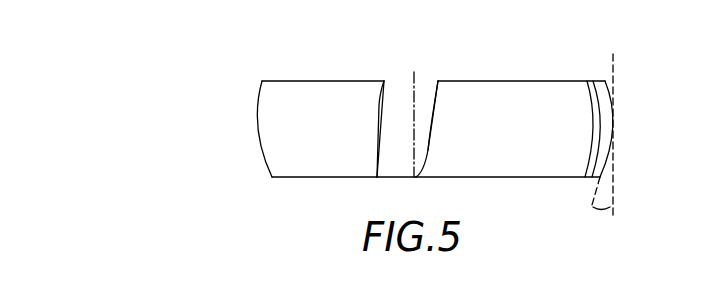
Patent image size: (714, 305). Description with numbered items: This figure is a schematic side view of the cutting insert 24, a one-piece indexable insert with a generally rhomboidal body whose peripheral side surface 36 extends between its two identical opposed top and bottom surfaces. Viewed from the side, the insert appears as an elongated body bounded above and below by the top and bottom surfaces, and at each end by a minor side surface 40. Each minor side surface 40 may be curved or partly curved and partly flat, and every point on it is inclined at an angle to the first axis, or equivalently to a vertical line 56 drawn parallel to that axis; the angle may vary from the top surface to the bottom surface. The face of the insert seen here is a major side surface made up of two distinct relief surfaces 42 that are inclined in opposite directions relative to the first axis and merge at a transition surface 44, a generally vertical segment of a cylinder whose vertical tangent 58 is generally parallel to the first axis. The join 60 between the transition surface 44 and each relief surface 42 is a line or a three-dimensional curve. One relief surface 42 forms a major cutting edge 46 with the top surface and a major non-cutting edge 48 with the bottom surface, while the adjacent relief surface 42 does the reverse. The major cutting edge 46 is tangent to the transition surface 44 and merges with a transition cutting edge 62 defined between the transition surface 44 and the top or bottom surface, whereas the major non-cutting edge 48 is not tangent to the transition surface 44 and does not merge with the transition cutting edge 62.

The cutting insert 24 is at (134, 56).
The peripheral side surface 36 is at (108, 121).
The minor side surface 40 is at (242, 131).
The relief surface 42 is at (563, 97).
The transition surface 44 is at (390, 86).
The major cutting edge 46 is at (290, 81).
The major non-cutting edge 48 is at (513, 81).
The vertical line 56 is at (608, 122).
The vertical tangent 58 is at (418, 96).
The join 60 is at (377, 112).
The transition cutting edge 62 is at (404, 80).